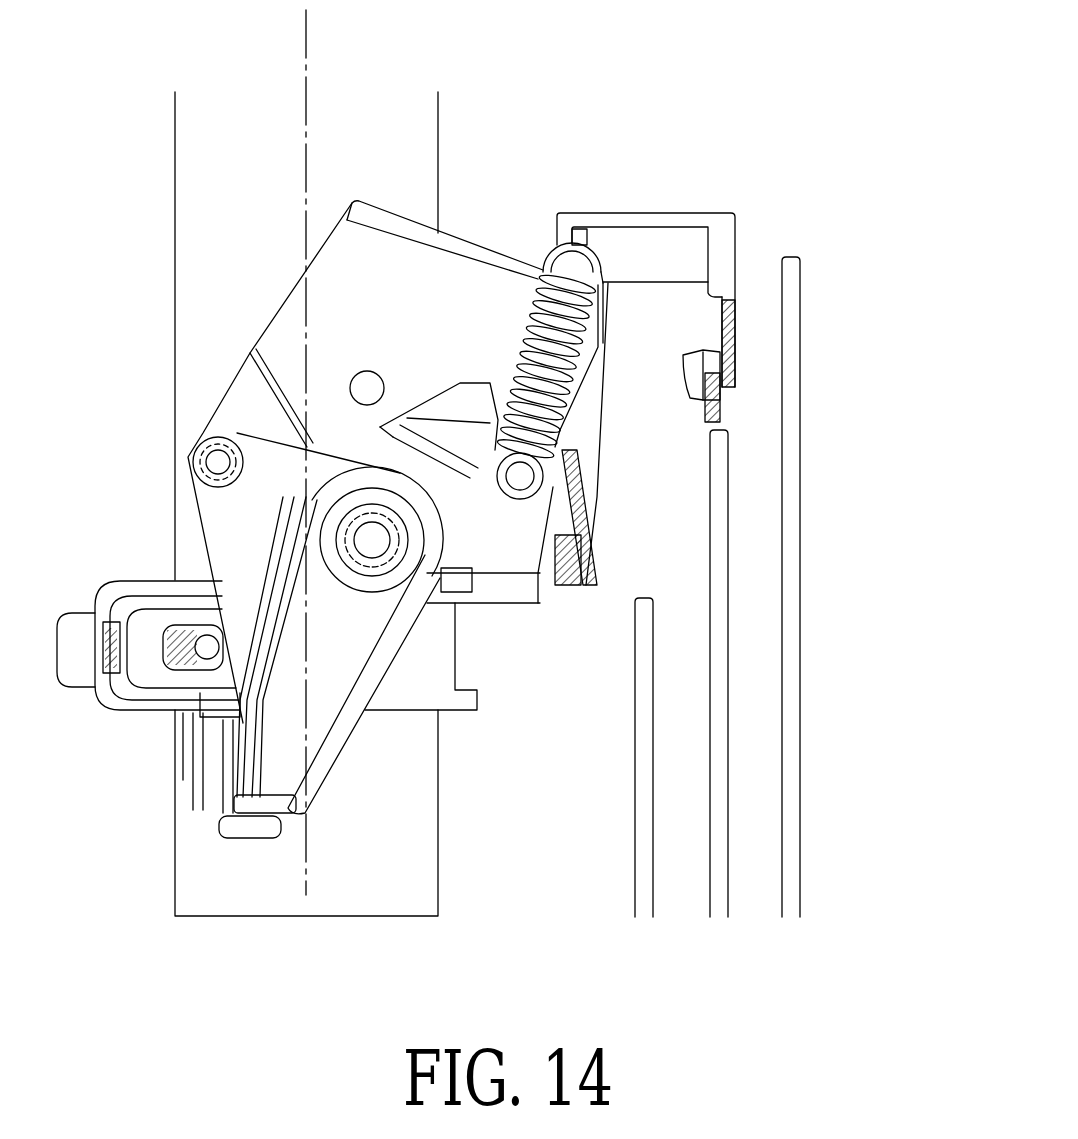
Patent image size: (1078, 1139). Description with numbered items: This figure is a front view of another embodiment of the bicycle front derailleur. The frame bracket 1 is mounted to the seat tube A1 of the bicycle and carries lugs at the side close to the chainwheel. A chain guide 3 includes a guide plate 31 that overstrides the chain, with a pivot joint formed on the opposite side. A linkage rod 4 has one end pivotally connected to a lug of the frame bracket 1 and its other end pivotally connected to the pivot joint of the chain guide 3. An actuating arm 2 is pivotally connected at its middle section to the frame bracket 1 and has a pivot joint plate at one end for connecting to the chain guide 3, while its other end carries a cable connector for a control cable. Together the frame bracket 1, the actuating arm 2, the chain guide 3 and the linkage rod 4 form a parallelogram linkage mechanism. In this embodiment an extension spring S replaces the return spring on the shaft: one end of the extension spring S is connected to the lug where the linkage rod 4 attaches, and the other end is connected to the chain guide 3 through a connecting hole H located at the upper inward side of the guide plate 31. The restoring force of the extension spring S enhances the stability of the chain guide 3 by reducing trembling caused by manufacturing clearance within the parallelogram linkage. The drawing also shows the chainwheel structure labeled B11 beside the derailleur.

The seat tube A1 is at (305, 150).
The frame bracket 1 is at (483, 547).
The actuating arm 2 is at (322, 707).
The chain guide 3 is at (458, 287).
The linkage rod 4 is at (447, 420).
The extension spring S is at (508, 280).
The connecting hole H is at (563, 215).
The guide plate 31 is at (680, 267).
The rails B11 is at (643, 805).